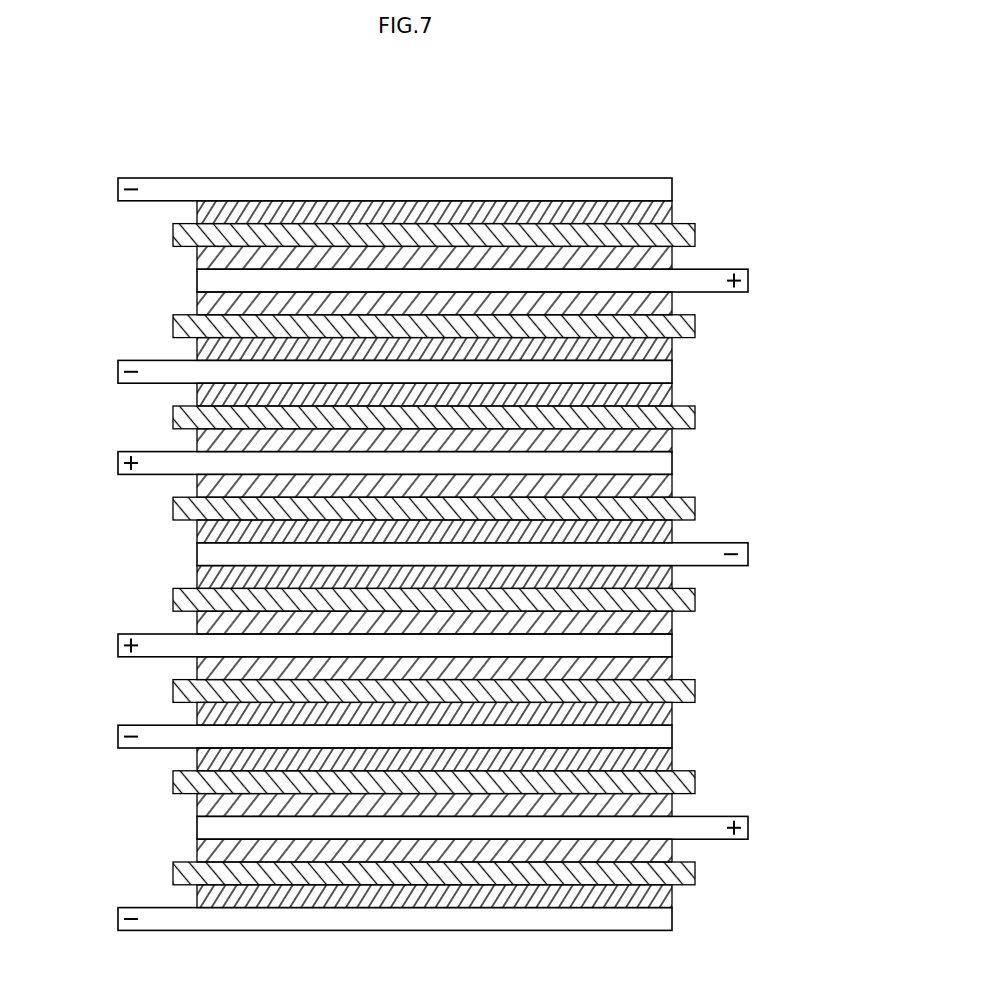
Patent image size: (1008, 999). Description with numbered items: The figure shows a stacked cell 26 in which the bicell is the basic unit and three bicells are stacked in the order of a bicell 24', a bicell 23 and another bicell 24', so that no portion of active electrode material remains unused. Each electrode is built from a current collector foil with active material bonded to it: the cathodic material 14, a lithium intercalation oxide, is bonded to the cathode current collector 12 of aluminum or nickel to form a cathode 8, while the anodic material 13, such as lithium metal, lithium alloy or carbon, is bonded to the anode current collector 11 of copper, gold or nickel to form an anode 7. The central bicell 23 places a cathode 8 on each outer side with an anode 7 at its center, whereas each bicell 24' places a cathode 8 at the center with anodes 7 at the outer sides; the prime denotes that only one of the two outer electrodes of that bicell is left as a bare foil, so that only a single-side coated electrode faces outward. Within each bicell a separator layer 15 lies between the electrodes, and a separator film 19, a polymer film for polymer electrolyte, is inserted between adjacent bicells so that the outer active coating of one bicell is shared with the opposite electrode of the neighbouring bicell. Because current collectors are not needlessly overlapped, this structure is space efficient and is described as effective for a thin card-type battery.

The anode 7 is at (743, 177).
The cathode 8 is at (808, 237).
The anode current collector 11 is at (672, 186).
The cathode current collector 12 is at (748, 282).
The anodic material 13 is at (672, 214).
The cathodic material 14 is at (655, 262).
The separator layer 15 is at (173, 235).
The separator film 19 is at (173, 418).
The bicell 23 is at (107, 430).
The bicell 24' is at (370, 565).
The stacked cell 26 is at (800, 486).